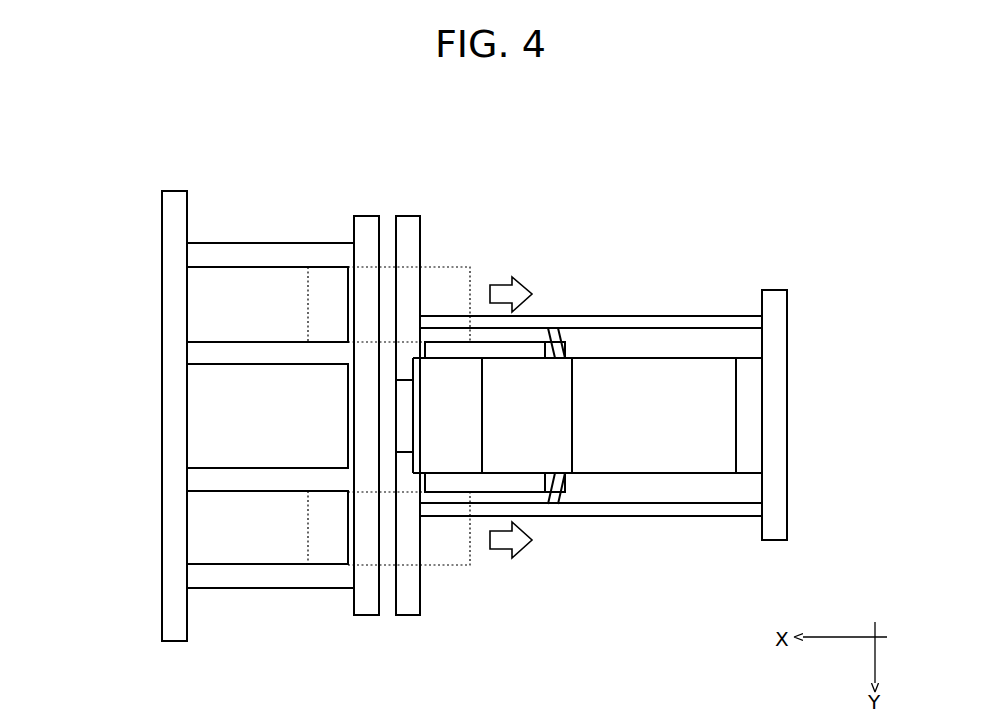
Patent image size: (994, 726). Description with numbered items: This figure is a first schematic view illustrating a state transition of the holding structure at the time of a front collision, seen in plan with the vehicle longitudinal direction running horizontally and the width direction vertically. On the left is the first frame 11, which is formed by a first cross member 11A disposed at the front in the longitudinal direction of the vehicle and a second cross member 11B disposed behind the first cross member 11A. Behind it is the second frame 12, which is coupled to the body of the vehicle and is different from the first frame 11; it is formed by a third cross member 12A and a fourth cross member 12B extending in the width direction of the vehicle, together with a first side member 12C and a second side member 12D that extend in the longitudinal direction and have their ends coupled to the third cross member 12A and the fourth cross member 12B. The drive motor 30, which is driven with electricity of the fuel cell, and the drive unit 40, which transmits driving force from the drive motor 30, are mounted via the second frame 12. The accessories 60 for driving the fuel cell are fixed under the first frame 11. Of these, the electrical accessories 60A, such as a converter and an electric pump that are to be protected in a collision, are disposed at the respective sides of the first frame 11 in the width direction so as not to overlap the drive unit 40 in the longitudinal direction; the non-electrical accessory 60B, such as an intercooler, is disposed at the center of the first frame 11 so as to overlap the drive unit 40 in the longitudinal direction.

The first frame 11 is at (214, 441).
The first cross member 11A is at (160, 600).
The second cross member 11B is at (365, 617).
The second frame 12 is at (673, 442).
The third cross member 12A is at (412, 618).
The fourth cross member 12B is at (790, 367).
The first side member 12C is at (697, 312).
The second side member 12D is at (668, 517).
The drive motor 30 is at (635, 387).
The drive unit 40 is at (553, 457).
The accessories 60 is at (324, 401).
The electrical accessories 60A is at (252, 282).
The non-electrical accessory 60B is at (220, 415).